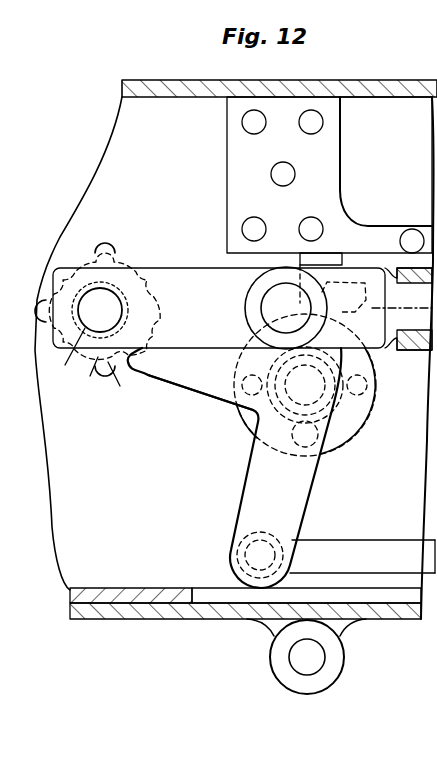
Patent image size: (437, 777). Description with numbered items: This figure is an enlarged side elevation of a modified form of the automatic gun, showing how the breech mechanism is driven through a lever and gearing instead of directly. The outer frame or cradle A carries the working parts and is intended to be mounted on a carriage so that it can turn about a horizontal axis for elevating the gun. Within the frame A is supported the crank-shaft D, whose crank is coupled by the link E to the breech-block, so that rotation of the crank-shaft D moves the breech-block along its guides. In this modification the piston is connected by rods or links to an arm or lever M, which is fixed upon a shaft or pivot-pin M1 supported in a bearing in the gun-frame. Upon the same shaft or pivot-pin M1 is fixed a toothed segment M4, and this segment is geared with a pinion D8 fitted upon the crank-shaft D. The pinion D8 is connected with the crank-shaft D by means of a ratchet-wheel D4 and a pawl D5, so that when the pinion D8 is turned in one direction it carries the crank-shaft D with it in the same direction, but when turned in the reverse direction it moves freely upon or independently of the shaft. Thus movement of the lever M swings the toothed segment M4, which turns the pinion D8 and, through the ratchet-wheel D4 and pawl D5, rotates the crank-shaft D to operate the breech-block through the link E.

The outer frame or cradle A is at (236, 387).
The crank-shaft D is at (97, 309).
The ratchet-wheel D4 is at (66, 357).
The pawl D5 is at (88, 377).
The pinion D8 is at (121, 383).
The link E is at (242, 309).
The arm or lever M is at (235, 468).
The shaft or pivot-pin M1 is at (310, 393).
The toothed segment M4 is at (290, 310).